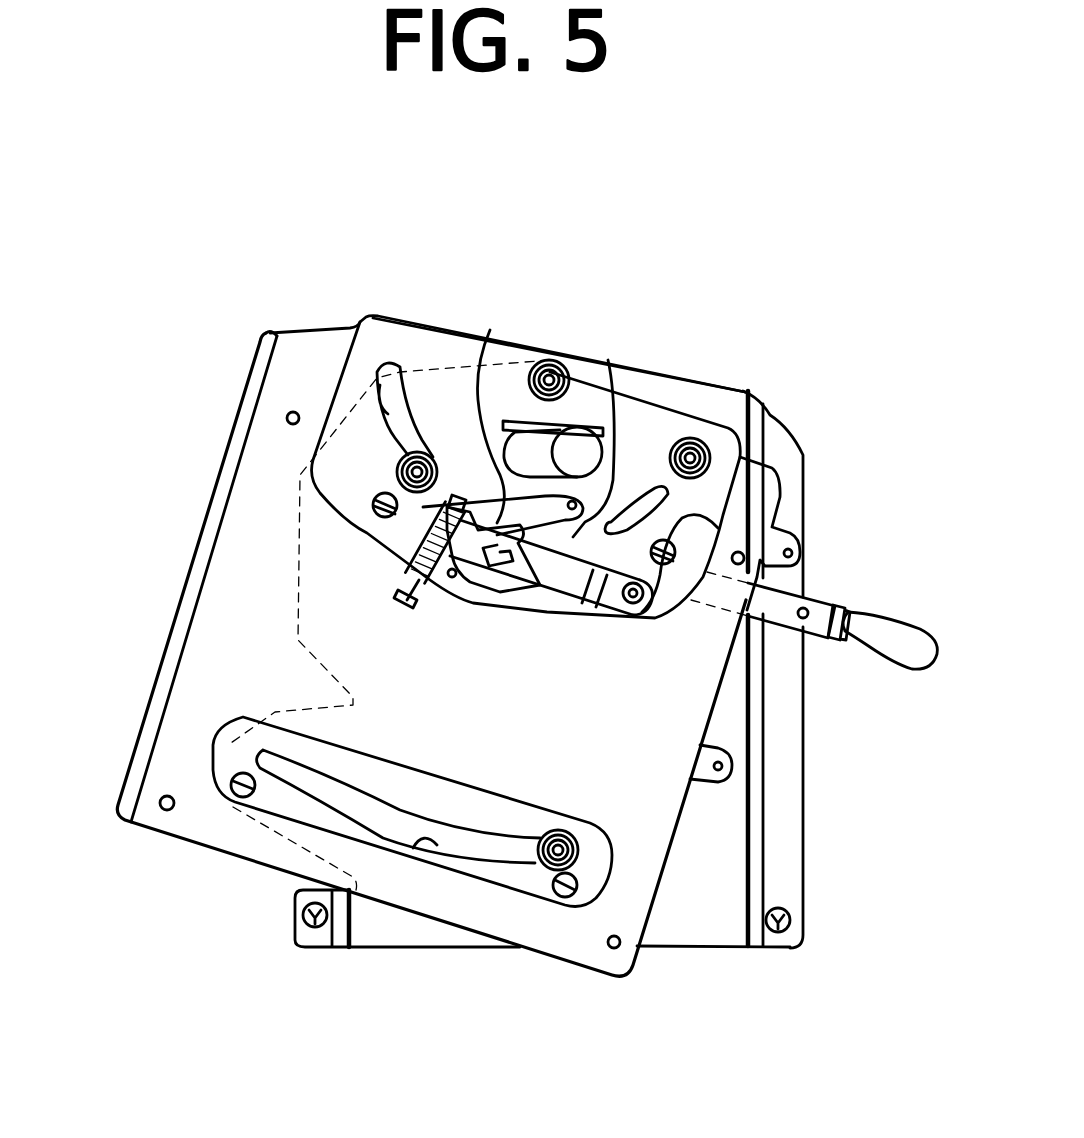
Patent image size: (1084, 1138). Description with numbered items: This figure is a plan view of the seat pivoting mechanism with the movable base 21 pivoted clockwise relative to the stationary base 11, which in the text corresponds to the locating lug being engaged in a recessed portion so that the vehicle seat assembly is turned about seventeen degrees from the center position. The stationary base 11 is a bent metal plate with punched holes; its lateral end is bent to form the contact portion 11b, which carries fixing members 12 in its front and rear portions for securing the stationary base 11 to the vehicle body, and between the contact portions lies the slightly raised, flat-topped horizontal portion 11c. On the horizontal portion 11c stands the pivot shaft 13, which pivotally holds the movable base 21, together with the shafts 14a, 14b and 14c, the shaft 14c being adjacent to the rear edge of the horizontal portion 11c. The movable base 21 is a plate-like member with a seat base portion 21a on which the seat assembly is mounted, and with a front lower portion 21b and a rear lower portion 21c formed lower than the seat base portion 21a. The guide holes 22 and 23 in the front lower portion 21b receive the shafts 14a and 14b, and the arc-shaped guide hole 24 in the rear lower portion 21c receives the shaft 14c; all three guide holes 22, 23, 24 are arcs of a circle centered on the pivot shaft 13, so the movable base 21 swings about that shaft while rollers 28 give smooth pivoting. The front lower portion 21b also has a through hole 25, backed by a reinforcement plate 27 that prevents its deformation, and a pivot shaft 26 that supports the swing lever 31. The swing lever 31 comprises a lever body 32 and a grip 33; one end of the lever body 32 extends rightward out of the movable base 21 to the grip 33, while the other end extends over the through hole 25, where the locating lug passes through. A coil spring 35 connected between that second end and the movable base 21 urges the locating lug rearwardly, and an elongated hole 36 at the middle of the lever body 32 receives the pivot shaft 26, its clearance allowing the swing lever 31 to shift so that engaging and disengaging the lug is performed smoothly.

The stationary base 11 is at (447, 950).
The contact portion 11b is at (775, 828).
The horizontal portion 11c is at (677, 913).
The fixing member 12 is at (292, 935).
The pivot shaft 13 is at (550, 362).
The shaft 14a is at (395, 473).
The shaft 14b is at (697, 440).
The shaft 14c is at (548, 872).
The movable base 21 is at (208, 504).
The seat base portion 21a is at (203, 643).
The front lower portion 21b is at (425, 347).
The rear lower portion 21c is at (225, 757).
The guide hole 22 is at (657, 488).
The guide hole 23 is at (375, 380).
The guide hole 24 is at (414, 845).
The through hole 25 is at (486, 360).
The pivot shaft 26 is at (723, 518).
The reinforcement plate 27 is at (608, 362).
The roller 28 is at (243, 797).
The swing lever 31 is at (824, 597).
The lever body 32 is at (781, 630).
The grip 33 is at (920, 668).
The coil spring 35 is at (433, 543).
The elongated hole 36 is at (655, 617).